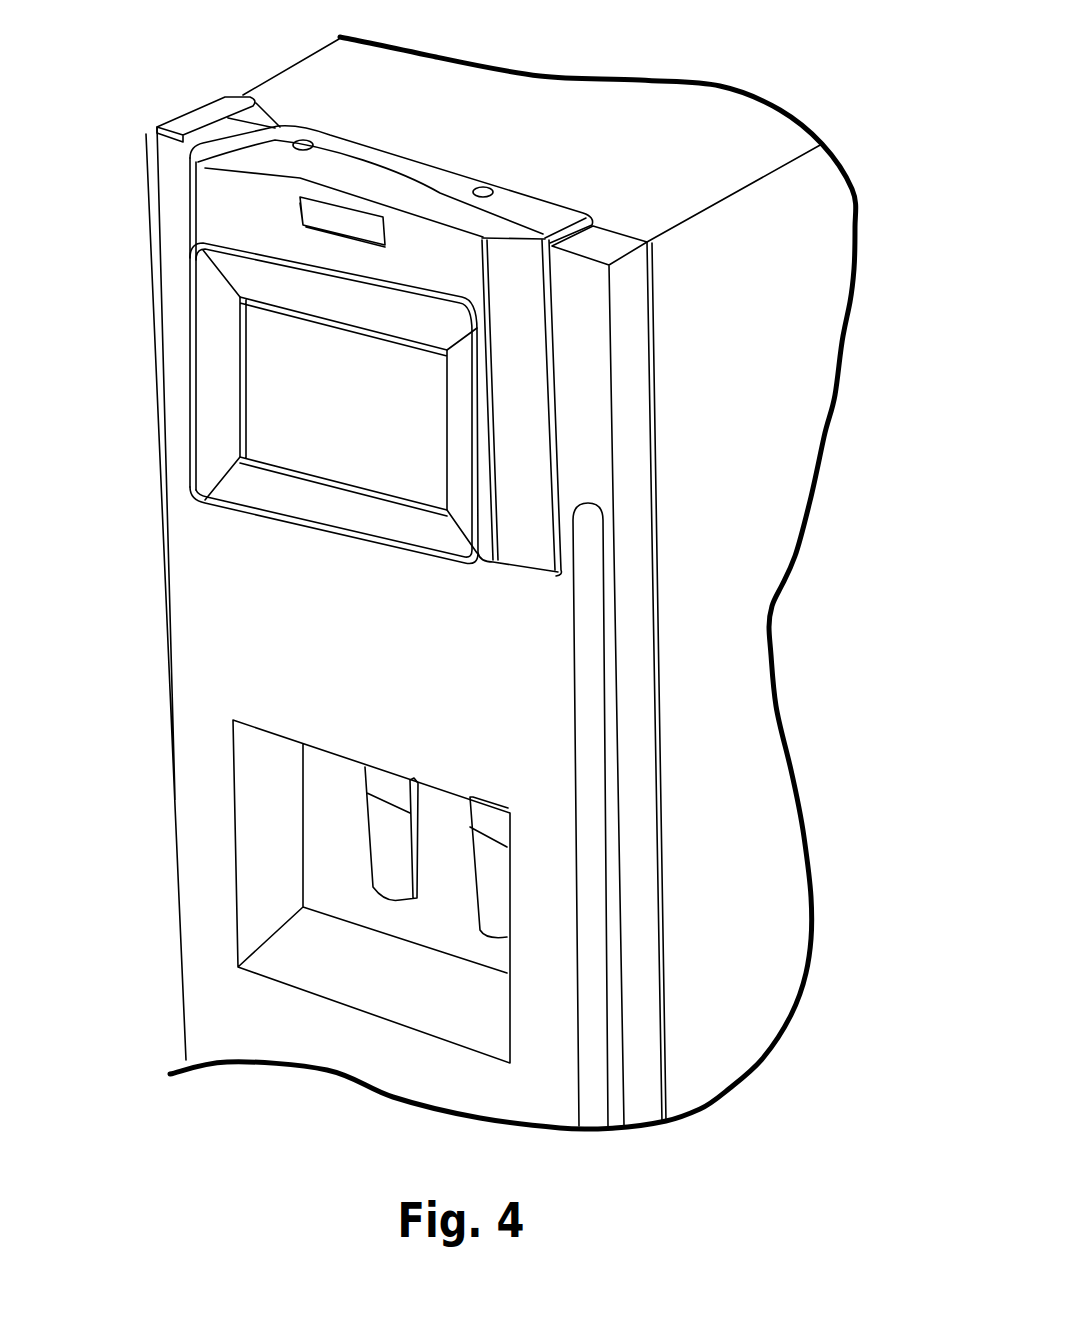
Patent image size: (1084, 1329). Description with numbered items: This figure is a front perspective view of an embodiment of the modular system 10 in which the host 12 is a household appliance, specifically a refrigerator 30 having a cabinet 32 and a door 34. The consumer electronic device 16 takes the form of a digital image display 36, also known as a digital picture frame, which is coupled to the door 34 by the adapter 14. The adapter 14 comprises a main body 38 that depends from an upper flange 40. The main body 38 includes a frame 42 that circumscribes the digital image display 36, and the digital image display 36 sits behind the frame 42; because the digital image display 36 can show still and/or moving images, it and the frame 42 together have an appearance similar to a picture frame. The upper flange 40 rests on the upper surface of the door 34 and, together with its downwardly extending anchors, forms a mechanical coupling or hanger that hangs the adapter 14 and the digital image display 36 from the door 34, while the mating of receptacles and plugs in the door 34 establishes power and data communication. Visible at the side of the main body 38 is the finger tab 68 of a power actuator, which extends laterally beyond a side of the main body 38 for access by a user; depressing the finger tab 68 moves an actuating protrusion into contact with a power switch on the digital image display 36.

The modular system 10 is at (168, 54).
The host 12 is at (524, 132).
The adapter 14 is at (185, 190).
The consumer electronic device 16 is at (247, 511).
The refrigerator 30 is at (645, 110).
The cabinet 32 is at (818, 212).
The door 34 is at (633, 383).
The digital image display 36 is at (265, 365).
The main body 38 is at (260, 216).
The upper flange 40 is at (395, 170).
The frame 42 is at (302, 508).
The finger tab 68 is at (558, 477).